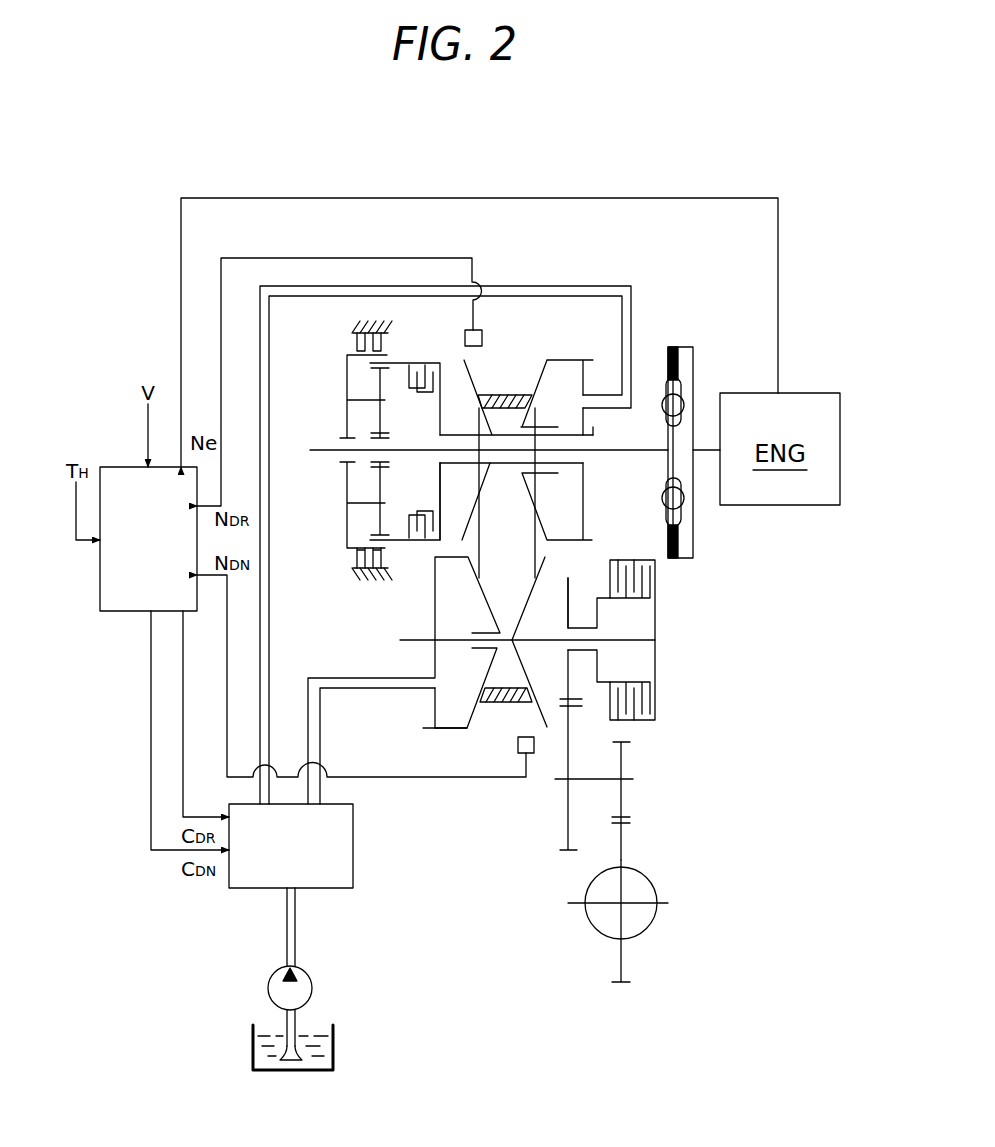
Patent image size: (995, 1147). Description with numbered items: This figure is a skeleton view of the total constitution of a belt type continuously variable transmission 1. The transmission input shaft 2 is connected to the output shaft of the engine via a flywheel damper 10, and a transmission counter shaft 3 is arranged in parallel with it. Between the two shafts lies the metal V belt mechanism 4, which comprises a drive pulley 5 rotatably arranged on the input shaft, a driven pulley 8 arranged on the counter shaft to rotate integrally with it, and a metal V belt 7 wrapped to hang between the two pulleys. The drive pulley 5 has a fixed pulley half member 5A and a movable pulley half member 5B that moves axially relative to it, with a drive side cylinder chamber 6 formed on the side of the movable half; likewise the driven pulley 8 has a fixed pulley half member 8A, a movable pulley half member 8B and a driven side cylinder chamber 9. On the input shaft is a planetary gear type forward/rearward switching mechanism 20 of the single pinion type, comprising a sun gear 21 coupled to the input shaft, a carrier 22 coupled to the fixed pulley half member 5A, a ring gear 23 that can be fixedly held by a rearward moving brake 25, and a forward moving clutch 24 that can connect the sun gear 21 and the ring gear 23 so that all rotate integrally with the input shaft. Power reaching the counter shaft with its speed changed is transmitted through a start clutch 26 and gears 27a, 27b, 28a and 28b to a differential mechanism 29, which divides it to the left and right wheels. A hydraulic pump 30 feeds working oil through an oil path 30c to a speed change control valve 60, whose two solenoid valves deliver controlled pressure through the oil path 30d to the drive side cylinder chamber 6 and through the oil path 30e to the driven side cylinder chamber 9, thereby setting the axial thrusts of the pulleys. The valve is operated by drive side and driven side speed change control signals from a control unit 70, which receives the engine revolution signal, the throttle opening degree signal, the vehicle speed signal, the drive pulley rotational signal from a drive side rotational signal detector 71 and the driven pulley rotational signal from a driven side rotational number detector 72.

The belt type continuously variable transmission 1 is at (621, 183).
The transmission input shaft 2 is at (320, 450).
The transmission counter shaft 3 is at (405, 640).
The metal V belt mechanism 4 is at (420, 581).
The drive pulley 5 is at (524, 437).
The fixed pulley half member 5A is at (468, 363).
The movable pulley half member 5B is at (570, 361).
The drive side cylinder chamber 6 is at (565, 413).
The metal V belt 7 is at (517, 553).
The driven pulley 8 is at (481, 705).
The fixed pulley half member 8A is at (523, 666).
The movable pulley half member 8B is at (446, 730).
The driven side cylinder chamber 9 is at (467, 699).
The flywheel damper 10 is at (683, 348).
The planetary gear type forward/rearward switching mechanism 20 is at (340, 350).
The sun gear 21 is at (383, 440).
The carrier 22 is at (382, 514).
The ring gear 23 is at (346, 380).
The forward moving clutch 24 is at (430, 364).
The rearward moving brake 25 is at (352, 569).
The start clutch 26 is at (655, 622).
The gear 27a is at (582, 573).
The gear 27b is at (571, 852).
The gear 28a is at (630, 742).
The gear 28b is at (630, 984).
The differential mechanism 29 is at (651, 920).
The hydraulic pump 30 is at (312, 988).
The oil path 30c is at (296, 921).
The oil path 30d is at (592, 286).
The oil path 30e is at (380, 689).
The speed change control valve 60 is at (353, 835).
The control unit 70 is at (100, 603).
The drive side rotational signal detector 71 is at (482, 337).
The driven side rotational number detector 72 is at (534, 745).